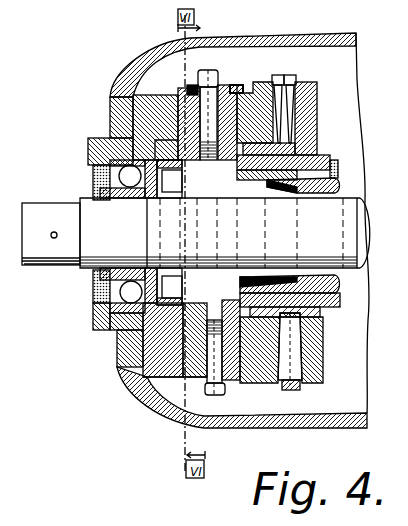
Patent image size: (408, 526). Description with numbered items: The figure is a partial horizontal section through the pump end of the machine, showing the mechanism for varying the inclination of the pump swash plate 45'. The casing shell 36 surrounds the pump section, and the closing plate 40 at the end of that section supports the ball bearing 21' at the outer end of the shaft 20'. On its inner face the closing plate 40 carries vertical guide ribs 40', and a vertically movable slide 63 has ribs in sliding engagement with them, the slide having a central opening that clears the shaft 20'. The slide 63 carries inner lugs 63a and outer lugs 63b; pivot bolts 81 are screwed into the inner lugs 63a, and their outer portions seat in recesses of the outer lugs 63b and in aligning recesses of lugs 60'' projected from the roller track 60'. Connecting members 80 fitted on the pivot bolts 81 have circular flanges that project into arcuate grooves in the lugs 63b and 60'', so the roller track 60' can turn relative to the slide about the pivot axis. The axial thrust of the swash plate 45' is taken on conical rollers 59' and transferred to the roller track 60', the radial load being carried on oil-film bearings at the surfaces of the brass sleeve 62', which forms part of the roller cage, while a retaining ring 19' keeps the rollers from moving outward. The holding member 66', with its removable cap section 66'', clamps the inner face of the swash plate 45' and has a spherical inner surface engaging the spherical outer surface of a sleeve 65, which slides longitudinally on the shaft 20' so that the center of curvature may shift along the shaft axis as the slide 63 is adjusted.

The casing shell 36 is at (141, 71).
The vertical guide ribs 40' is at (123, 147).
The closing plate 40 is at (121, 317).
The ball bearing 21' is at (135, 231).
The slide 63 is at (190, 300).
The shaft 20' is at (196, 233).
The pivot bolts 81 is at (202, 88).
The inner lugs 63a is at (215, 355).
The outer lugs 63b is at (200, 357).
The lugs 60'' is at (263, 235).
The roller track 60' is at (273, 101).
The retaining ring 19' is at (306, 99).
The swash plate 45' is at (299, 118).
The holding member 66' is at (340, 158).
The removable cap section 66'' is at (320, 160).
The sleeve 65 is at (340, 186).
The brass sleeve 62' is at (296, 312).
The conical rollers 59' is at (301, 348).
The connecting members 80 is at (232, 380).